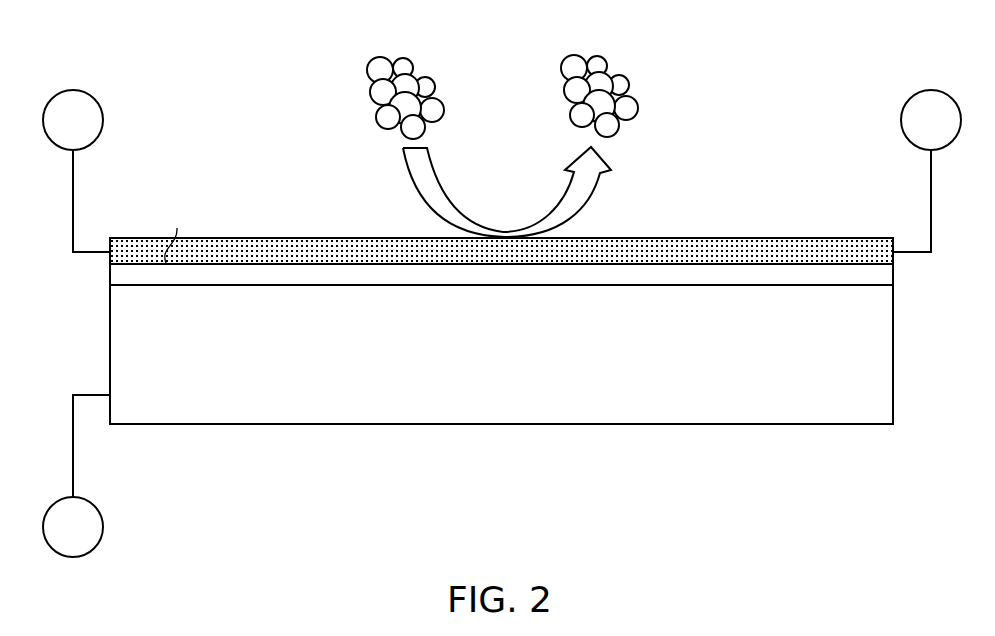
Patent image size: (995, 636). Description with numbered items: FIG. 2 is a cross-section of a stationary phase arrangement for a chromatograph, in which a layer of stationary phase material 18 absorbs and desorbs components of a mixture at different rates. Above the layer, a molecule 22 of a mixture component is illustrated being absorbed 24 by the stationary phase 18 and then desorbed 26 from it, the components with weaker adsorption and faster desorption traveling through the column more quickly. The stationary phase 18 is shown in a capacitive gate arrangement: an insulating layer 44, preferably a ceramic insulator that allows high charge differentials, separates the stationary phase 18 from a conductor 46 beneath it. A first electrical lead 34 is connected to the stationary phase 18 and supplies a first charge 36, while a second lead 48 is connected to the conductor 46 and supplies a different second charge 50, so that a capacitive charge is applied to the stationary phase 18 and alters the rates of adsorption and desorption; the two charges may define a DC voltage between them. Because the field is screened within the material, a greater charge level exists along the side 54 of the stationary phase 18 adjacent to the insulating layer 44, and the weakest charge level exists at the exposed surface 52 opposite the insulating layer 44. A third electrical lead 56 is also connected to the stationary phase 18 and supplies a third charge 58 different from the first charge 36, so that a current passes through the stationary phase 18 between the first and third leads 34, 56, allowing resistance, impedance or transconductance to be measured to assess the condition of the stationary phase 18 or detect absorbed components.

The stationary phase material 18 is at (474, 332).
The molecule 22 is at (371, 57).
The absorption 24 is at (413, 187).
The desorption 26 is at (596, 185).
The first electrical lead 34 is at (73, 190).
The first charge 36 is at (103, 120).
The insulating layer 44 is at (110, 275).
The conductor 46 is at (503, 425).
The second lead 48 is at (73, 465).
The second charge 50 is at (103, 527).
The exposed surface 52 is at (230, 237).
The side 54 is at (176, 235).
The third electrical lead 56 is at (931, 190).
The third charge 58 is at (901, 120).